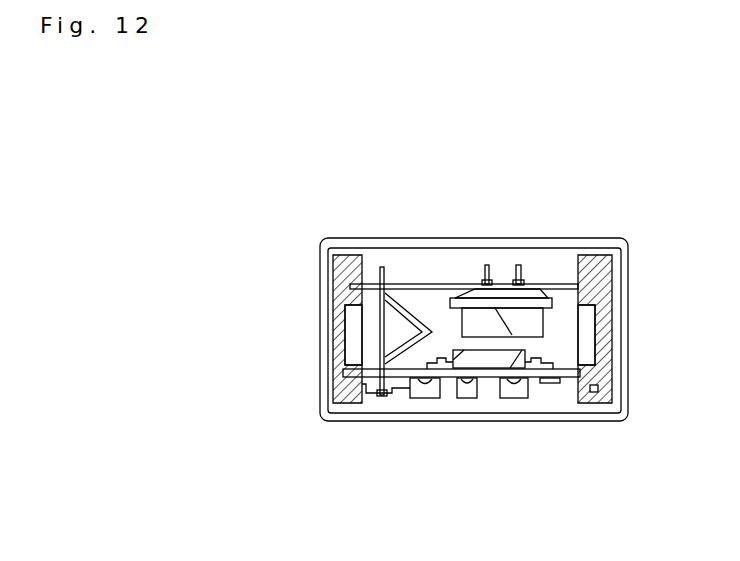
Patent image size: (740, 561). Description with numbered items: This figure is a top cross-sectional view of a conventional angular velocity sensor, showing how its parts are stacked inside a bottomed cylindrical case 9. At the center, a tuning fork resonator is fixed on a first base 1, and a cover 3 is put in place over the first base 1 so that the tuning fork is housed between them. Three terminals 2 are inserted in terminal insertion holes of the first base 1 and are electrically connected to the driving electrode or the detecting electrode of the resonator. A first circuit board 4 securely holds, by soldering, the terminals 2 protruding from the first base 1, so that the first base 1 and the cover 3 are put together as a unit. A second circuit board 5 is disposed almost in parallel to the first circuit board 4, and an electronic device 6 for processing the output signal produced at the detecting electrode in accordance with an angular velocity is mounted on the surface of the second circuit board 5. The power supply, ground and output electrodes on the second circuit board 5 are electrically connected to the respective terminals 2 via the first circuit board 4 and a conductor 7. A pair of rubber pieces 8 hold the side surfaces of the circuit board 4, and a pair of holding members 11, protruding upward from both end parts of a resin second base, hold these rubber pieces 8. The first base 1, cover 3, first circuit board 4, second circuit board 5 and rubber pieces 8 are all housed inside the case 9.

The first base 1 is at (503, 318).
The terminals 2 is at (490, 297).
The cover 3 is at (537, 315).
The first circuit board 4 is at (412, 287).
The second circuit board 5 is at (403, 376).
The electronic device 6 is at (488, 358).
The conductor 7 is at (381, 267).
The rubber pieces 8 is at (340, 288).
The case 9 is at (596, 240).
The holding members 11 is at (335, 343).